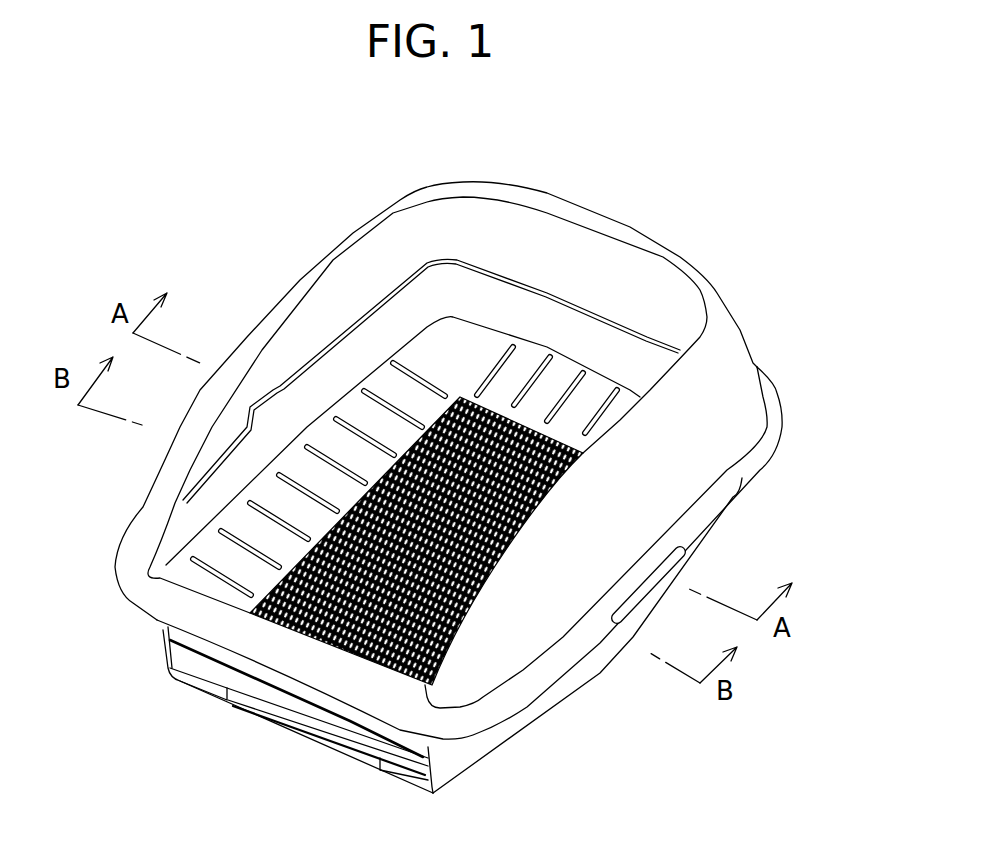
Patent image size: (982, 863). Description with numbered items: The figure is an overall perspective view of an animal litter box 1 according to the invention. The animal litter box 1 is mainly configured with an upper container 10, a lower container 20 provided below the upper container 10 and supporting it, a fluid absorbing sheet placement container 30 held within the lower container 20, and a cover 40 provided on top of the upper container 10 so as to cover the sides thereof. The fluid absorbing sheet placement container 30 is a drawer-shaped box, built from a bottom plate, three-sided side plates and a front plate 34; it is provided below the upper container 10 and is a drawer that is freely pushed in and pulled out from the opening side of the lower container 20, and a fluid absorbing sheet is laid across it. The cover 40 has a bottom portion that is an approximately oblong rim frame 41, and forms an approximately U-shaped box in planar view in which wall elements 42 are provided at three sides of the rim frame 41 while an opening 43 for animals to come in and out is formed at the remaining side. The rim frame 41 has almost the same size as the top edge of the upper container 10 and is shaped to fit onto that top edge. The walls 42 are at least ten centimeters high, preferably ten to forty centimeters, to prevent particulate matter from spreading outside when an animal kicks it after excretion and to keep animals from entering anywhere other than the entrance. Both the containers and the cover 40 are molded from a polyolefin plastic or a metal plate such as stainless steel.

The animal litter box 1 is at (606, 126).
The upper container 10 is at (150, 636).
The lower container 20 is at (745, 514).
The fluid absorbing sheet placement container 30 is at (278, 733).
The front plate 34 is at (203, 675).
The cover 40 is at (740, 304).
The rim frame 41 is at (773, 407).
The wall elements 42 is at (743, 360).
The opening 43 is at (617, 270).